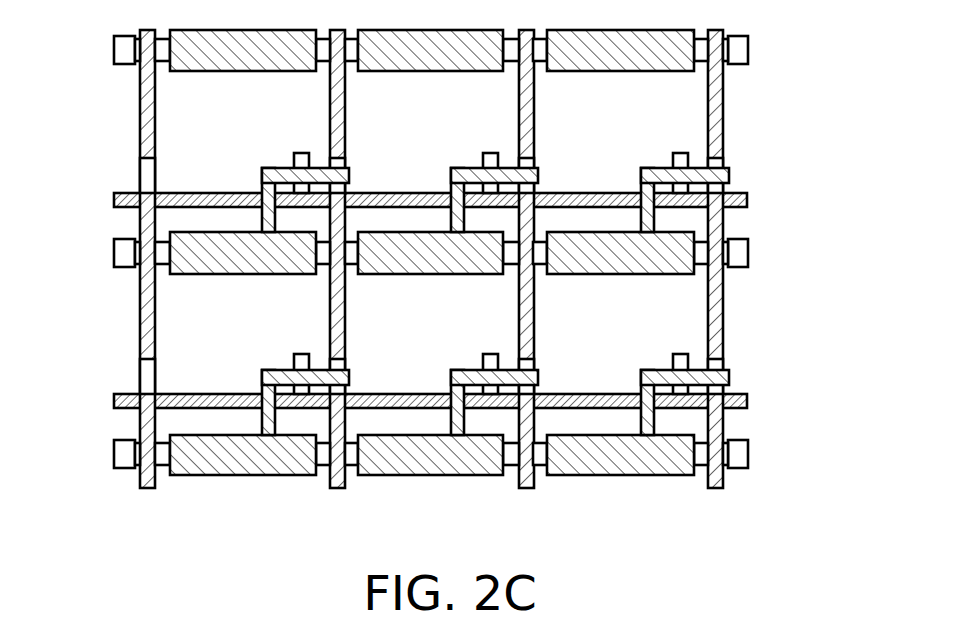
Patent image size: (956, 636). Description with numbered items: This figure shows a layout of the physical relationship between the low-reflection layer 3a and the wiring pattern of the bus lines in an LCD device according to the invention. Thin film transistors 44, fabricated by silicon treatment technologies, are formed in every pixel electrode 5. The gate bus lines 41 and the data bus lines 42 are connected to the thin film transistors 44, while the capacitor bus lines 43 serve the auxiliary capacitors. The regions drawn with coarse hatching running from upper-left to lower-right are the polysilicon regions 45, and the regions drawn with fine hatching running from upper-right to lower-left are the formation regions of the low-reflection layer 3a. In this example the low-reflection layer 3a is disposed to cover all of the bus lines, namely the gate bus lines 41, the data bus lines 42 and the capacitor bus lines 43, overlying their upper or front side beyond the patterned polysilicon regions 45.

The low-reflection layer 3a is at (747, 200).
The pixel electrode 5 is at (182, 118).
The gate bus line 41 is at (634, 192).
The data bus line 42 is at (712, 367).
The capacitor bus line 43 is at (734, 254).
The thin film transistor 44 is at (692, 147).
The polysilicon region 45 is at (462, 475).